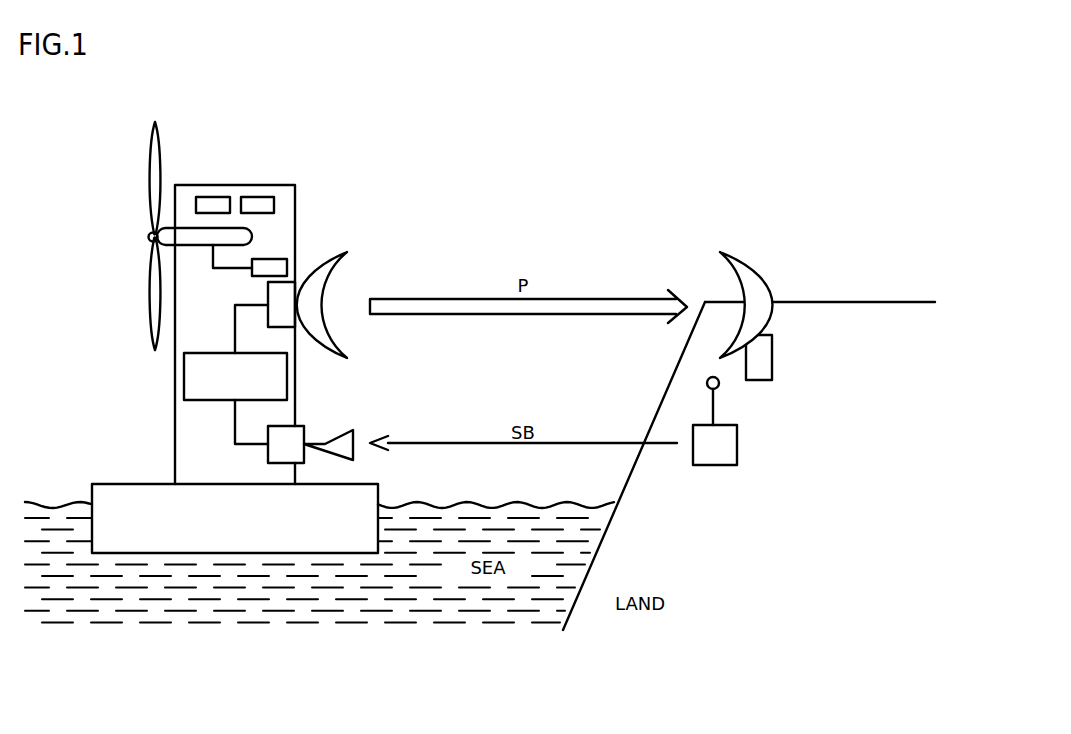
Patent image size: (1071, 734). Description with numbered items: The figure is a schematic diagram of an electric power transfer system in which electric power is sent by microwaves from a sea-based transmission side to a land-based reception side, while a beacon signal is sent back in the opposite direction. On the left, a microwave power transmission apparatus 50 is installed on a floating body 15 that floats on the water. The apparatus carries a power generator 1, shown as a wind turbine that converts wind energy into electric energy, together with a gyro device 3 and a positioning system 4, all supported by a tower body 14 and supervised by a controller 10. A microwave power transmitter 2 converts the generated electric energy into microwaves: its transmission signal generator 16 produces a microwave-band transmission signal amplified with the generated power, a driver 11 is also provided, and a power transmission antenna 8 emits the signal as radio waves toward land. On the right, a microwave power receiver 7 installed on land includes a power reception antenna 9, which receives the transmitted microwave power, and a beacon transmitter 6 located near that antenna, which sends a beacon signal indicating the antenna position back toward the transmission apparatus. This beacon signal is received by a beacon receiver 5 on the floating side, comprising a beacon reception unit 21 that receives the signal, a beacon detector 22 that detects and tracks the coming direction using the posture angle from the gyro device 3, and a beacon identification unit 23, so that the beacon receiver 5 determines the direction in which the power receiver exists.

The microwave power transmission apparatus 50 is at (108, 126).
The power generator 1 is at (149, 178).
The gyro device 3 is at (212, 197).
The positioning system 4 is at (257, 197).
The microwave power transmitter 2 is at (326, 265).
The transmission signal generator 16 is at (270, 258).
The driver 11 is at (286, 288).
The power transmission antenna 8 is at (347, 292).
The controller 10 is at (201, 400).
The tower body 14 is at (175, 448).
The floating body 15 is at (110, 484).
The beacon receiver 5 is at (370, 570).
The beacon reception unit 21 is at (307, 460).
The beacon detector 22 is at (307, 452).
The beacon identification unit 23 is at (365, 564).
The microwave power receiver 7 is at (773, 326).
The power reception antenna 9 is at (765, 277).
The beacon transmitter 6 is at (737, 438).